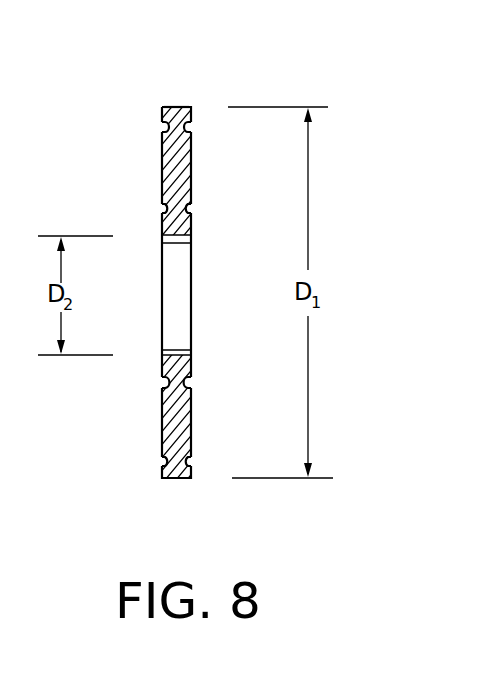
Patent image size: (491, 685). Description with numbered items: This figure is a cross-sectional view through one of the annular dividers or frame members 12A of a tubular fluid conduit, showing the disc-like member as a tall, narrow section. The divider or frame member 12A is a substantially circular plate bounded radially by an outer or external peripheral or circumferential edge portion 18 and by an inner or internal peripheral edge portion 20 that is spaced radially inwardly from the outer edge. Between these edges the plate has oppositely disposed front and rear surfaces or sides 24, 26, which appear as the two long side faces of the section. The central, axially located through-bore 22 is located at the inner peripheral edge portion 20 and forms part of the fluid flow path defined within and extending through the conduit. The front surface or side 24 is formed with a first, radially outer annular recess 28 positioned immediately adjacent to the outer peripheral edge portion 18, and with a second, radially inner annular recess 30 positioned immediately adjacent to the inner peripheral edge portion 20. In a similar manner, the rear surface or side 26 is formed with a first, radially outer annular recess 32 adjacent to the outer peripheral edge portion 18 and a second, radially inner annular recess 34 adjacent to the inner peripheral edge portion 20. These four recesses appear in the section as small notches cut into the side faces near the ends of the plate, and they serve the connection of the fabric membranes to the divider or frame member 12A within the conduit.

The annular divider or frame member 12A is at (190, 111).
The radially outer peripheral edge portion 18 is at (174, 106).
The first radially outer annular recess 28 is at (161, 128).
The front surface or side 24 is at (161, 183).
The second radially inner annular recess 34 is at (192, 209).
The central axially located through-bore 22 is at (184, 286).
The radially inner peripheral edge portion 20 is at (181, 349).
The second radially inner annular recess 30 is at (166, 382).
The rear surface or side 26 is at (192, 411).
The first radially outer annular recess 32 is at (192, 462).